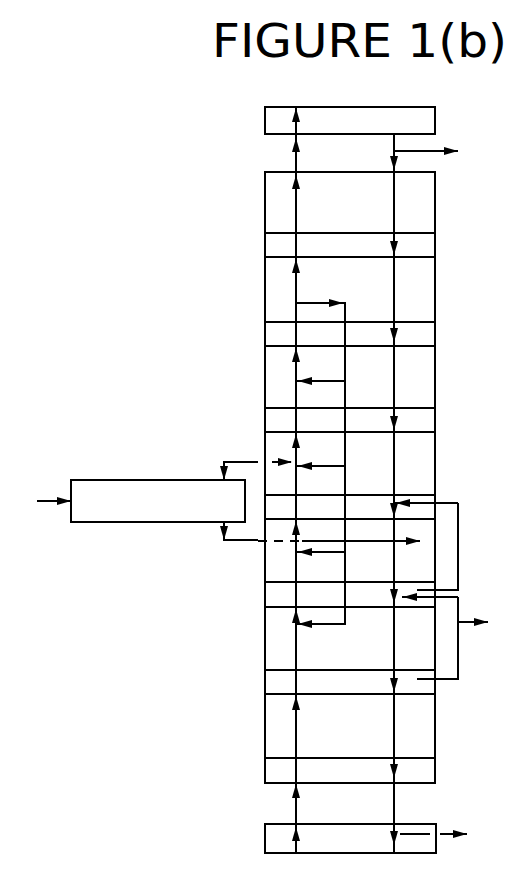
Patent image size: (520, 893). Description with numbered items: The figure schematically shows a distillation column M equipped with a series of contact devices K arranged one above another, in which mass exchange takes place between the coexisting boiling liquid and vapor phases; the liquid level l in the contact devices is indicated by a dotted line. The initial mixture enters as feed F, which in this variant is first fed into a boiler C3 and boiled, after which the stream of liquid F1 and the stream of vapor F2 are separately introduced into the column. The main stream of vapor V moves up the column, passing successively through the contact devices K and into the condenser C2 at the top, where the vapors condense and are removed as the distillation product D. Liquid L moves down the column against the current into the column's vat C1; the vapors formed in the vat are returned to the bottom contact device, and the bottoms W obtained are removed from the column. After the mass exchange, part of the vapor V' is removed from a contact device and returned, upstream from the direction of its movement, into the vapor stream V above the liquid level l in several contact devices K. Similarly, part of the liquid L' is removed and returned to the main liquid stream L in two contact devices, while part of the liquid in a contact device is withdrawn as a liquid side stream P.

The condenser C2 is at (265, 130).
The distillation product D is at (432, 137).
The main stream of vapor V is at (332, 480).
The liquid L is at (403, 493).
The part of the vapor V' is at (333, 450).
The distillation column M is at (265, 416).
The stream of vapor F2 is at (254, 447).
The boiler C3 is at (178, 480).
The feed F is at (54, 487).
The stream of liquid F1 is at (318, 555).
The part of the liquid L' is at (442, 588).
The liquid side stream P is at (482, 631).
The liquid level l is at (364, 653).
The contact devices K is at (278, 694).
The vat C1 is at (265, 842).
The bottoms W is at (437, 819).